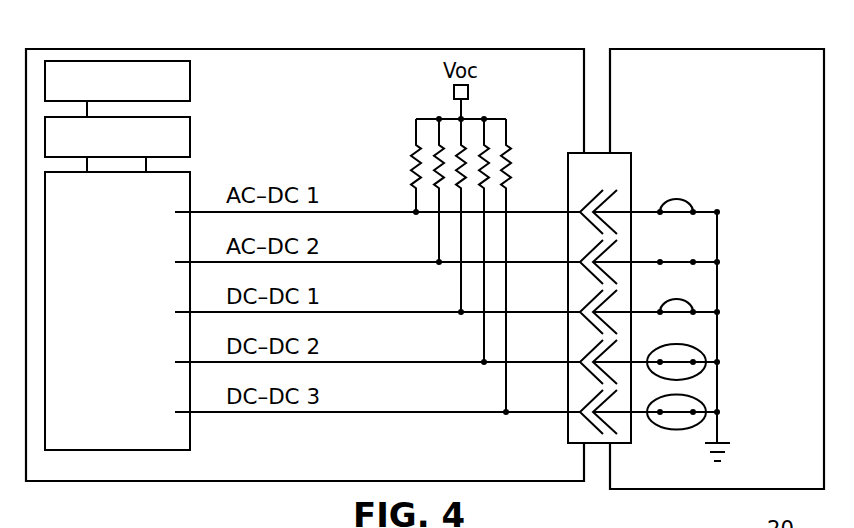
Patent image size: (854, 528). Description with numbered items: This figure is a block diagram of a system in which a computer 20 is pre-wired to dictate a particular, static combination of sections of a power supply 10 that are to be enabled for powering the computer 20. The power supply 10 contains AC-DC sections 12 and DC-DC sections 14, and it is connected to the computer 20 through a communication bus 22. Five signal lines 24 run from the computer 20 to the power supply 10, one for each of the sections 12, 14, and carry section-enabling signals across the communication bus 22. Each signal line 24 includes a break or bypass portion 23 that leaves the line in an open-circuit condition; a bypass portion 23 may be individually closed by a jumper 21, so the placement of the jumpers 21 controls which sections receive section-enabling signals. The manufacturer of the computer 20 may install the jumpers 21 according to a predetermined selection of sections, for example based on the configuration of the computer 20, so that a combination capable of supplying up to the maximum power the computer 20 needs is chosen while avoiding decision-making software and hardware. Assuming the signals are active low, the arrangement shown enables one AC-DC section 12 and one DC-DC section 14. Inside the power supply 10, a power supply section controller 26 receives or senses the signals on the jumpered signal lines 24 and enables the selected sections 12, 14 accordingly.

The power supply 10 is at (499, 49).
The AC-DC section 12 is at (117, 81).
The DC-DC section 14 is at (117, 137).
The computer 20 is at (662, 49).
The jumpers 21 is at (688, 199).
The communication bus 22 is at (592, 153).
The break or bypass portion 23 is at (702, 397).
The signal lines 24 is at (638, 362).
The power supply section controller 26 is at (190, 434).